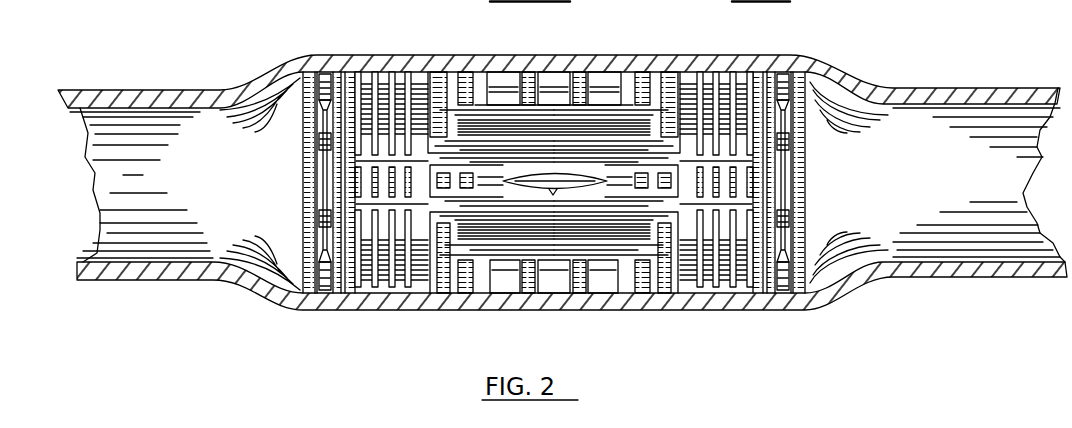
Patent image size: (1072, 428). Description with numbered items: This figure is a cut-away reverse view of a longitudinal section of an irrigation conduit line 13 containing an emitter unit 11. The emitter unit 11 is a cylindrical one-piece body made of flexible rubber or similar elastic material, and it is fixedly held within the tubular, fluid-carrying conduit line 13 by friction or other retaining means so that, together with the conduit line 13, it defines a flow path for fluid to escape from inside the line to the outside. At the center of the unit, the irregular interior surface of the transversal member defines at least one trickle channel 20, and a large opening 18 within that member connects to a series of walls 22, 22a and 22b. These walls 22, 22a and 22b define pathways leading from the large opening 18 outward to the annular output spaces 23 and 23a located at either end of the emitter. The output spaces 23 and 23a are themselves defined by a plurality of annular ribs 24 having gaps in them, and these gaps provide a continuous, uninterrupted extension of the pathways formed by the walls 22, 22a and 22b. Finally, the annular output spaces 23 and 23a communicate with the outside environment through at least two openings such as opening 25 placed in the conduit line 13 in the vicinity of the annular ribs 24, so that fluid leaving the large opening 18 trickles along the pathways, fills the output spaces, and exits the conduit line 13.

The emitter unit 11 is at (296, 153).
The conduit line 13 is at (165, 97).
The large opening 18 is at (545, 180).
The trickle channel 20 is at (553, 196).
The wall 22 is at (625, 217).
The wall 22a is at (602, 143).
The wall 22b is at (628, 190).
The annular output space 23 is at (702, 75).
The annular output space 23a is at (385, 78).
The annular ribs 24 is at (358, 77).
The opening 25 is at (387, 174).